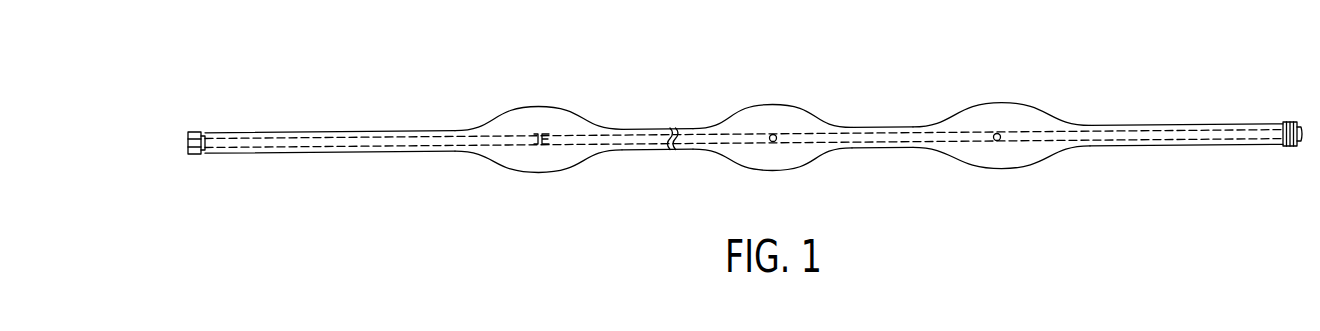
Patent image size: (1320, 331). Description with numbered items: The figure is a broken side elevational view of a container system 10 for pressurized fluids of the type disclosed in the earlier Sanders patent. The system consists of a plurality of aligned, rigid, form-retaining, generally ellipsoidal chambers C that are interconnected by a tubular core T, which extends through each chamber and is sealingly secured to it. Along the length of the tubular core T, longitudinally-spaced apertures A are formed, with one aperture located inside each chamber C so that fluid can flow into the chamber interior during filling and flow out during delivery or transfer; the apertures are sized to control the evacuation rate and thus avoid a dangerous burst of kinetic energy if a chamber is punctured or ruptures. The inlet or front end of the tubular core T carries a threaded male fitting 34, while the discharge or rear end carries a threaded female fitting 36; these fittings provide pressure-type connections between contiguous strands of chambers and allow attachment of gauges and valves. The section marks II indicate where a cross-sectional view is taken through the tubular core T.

The multi-balloon catheter assembly 10 is at (745, 116).
The distal end fitting 34 is at (1295, 146).
The proximal end fitting 36 is at (196, 155).
The aperture A is at (555, 136).
The chamber (balloon) C is at (540, 173).
The tube T is at (1053, 94).
The section line II- II is at (897, 138).